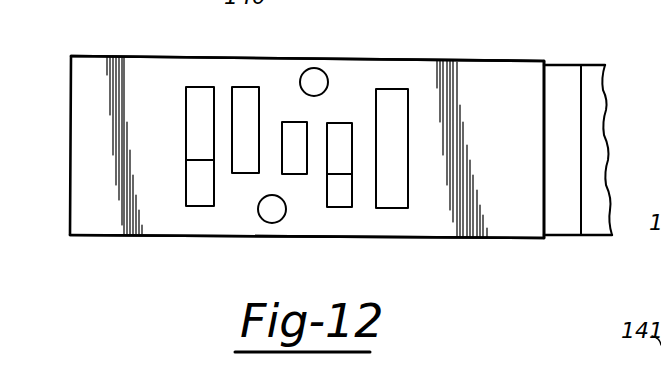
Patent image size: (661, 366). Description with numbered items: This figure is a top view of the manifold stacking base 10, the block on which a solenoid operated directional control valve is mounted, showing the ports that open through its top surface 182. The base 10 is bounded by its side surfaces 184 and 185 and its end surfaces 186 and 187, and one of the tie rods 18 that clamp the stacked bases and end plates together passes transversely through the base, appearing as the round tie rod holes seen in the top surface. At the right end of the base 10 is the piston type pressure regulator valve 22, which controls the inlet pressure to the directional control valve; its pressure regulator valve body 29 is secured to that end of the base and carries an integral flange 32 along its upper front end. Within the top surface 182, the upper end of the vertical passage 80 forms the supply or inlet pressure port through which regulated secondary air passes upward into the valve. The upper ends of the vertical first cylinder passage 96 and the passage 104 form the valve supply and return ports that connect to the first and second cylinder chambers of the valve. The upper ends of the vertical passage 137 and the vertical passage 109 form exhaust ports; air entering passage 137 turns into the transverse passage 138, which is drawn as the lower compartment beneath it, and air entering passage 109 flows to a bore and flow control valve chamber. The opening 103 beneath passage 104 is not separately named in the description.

The manifold stacking base 10 is at (62, 223).
The tie rods 18 is at (318, 76).
The pressure regulator valve 22 is at (616, 79).
The pressure regulator valve body 29 is at (592, 72).
The integral flange 32 is at (560, 72).
The vertical passage 80 is at (295, 122).
The vertical first cylinder passage 96 is at (246, 88).
The lower window section 103 is at (340, 190).
The passage 104 is at (350, 130).
The vertical passage 109 is at (392, 90).
The vertical passage 137 is at (187, 112).
The transverse passage 138 is at (186, 178).
The top surface 182 is at (428, 225).
The side surface 184 is at (70, 115).
The side surface 185 is at (544, 215).
The end surface 186 is at (160, 56).
The end surface 187 is at (153, 237).